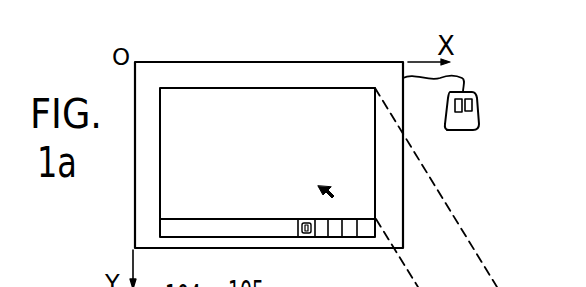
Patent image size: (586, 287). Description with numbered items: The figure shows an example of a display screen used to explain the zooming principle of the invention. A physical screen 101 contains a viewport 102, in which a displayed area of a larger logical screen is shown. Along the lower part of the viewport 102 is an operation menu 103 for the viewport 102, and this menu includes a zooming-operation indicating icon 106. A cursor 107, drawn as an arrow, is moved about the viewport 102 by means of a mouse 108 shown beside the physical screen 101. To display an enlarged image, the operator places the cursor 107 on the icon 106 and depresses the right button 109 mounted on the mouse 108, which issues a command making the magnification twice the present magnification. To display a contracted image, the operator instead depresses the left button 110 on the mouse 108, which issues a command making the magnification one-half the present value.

The physical screen 101 is at (272, 62).
The viewport 102 is at (190, 88).
The operation menu 103 is at (350, 237).
The zooming-operation indicating icon 106 is at (306, 237).
The cursor 107 is at (334, 186).
The mouse 108 is at (479, 123).
The right button 109 is at (478, 102).
The left button 110 is at (454, 130).